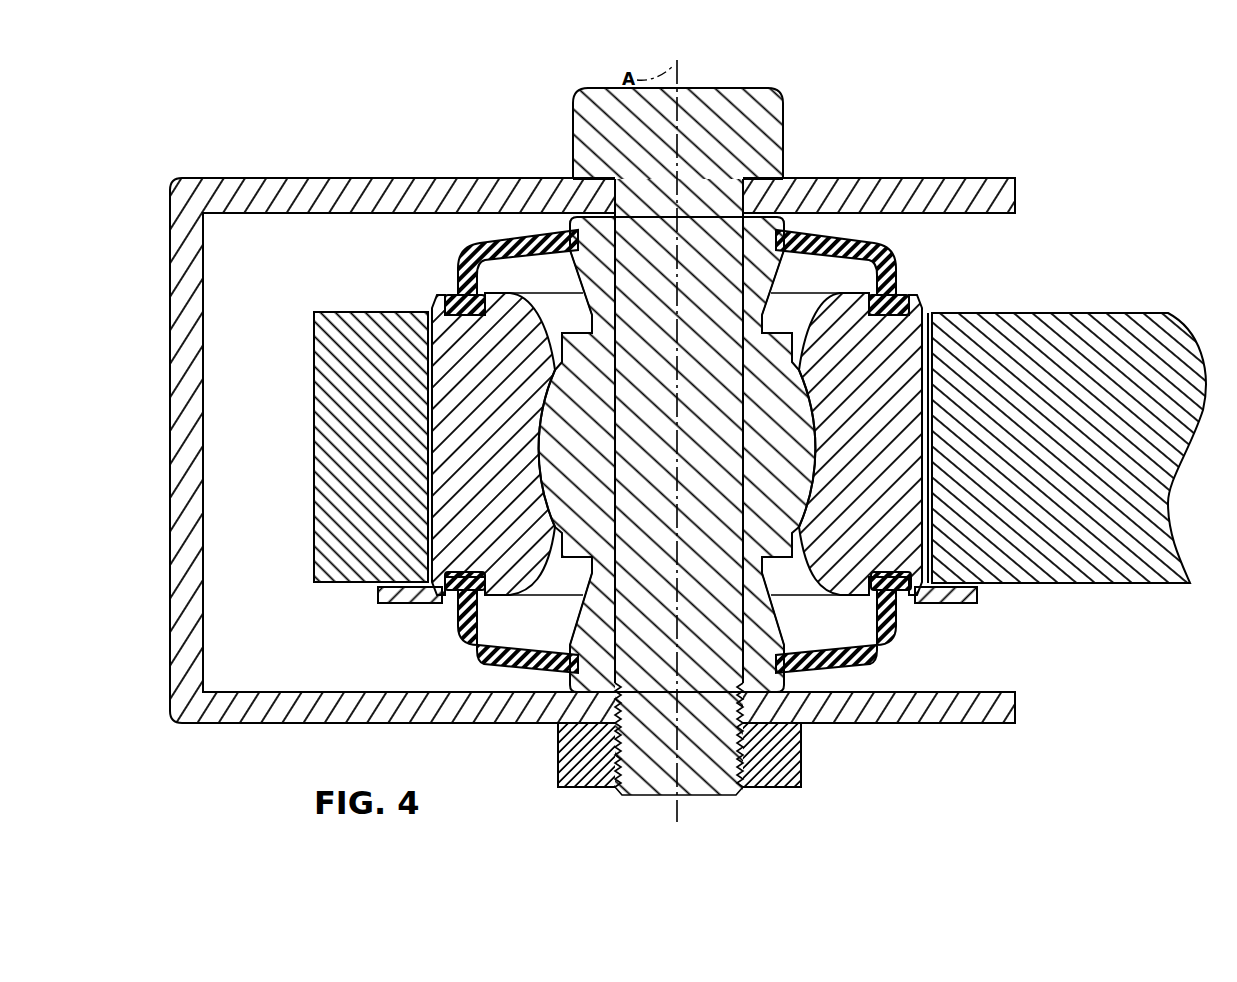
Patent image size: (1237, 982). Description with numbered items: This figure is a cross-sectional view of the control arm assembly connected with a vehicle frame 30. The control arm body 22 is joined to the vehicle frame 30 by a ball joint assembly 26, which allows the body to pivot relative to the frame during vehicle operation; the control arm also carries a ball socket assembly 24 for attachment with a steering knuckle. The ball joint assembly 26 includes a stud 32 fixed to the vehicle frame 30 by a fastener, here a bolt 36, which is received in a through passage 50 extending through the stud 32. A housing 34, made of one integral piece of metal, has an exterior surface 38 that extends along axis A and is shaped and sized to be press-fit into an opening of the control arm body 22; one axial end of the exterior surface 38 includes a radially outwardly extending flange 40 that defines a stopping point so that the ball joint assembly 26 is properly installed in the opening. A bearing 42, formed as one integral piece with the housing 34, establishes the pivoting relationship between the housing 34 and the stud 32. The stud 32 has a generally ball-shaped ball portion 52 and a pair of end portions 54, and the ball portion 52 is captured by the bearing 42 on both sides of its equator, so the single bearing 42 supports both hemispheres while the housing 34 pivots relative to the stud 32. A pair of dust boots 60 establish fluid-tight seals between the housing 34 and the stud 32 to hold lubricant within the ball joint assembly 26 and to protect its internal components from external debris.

The control arm body 22 is at (1157, 333).
The ball socket assembly 24 is at (916, 613).
The ball joint assembly 26 is at (992, 268).
The vehicle frame 30 is at (982, 180).
The stud 32 is at (540, 498).
The housing 34 is at (912, 567).
The bolt 36 is at (598, 97).
The exterior surface 38 is at (932, 340).
The flange 40 is at (412, 603).
The bearing 42 is at (826, 479).
The through passage 50 is at (617, 243).
The ball portion 52 is at (559, 473).
The end portions 54 is at (778, 277).
The dust boots 60 is at (455, 272).